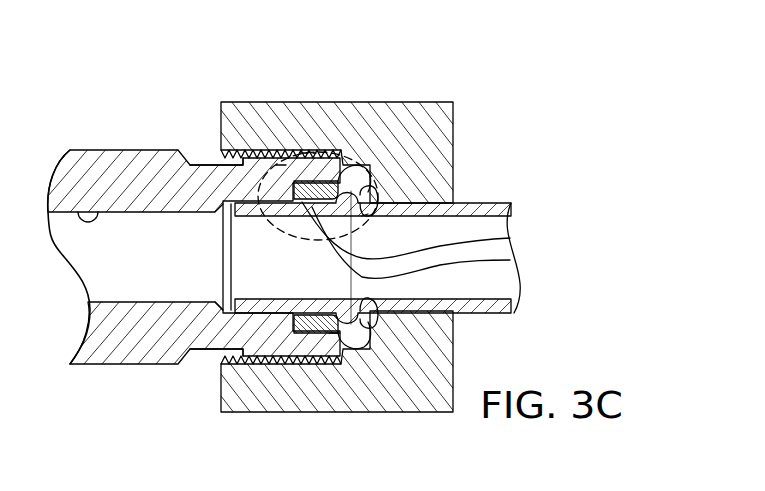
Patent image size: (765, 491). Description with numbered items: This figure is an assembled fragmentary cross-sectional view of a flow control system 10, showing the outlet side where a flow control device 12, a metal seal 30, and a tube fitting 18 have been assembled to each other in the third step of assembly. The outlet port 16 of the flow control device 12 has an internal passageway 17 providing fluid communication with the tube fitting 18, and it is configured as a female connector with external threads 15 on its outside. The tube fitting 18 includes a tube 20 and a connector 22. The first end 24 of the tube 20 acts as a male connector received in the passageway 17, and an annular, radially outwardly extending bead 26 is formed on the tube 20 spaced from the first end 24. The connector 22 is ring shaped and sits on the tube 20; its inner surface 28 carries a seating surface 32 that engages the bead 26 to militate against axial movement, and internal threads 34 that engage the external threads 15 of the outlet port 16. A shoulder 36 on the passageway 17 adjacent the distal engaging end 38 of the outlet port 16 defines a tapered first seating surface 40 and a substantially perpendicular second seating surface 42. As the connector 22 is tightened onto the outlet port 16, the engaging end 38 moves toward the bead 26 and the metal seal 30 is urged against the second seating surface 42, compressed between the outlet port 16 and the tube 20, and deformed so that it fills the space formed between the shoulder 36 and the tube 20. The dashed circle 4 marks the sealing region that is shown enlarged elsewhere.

The flow control system 10 is at (522, 89).
The flow control device 12 is at (152, 142).
The external threads 15 is at (280, 155).
The outlet port 16 is at (205, 172).
The internal passageway 17 is at (82, 211).
The tube fitting 18 is at (217, 67).
The tube 20 is at (495, 314).
The connector 22 is at (414, 102).
The first end 24 is at (219, 308).
The bead 26 is at (367, 350).
The inner surface 28 is at (340, 157).
The metal seal 30 is at (338, 335).
The seating surface 32 is at (368, 214).
The internal threads 34 is at (280, 163).
The shoulder 36 is at (573, 223).
The engaging end 38 is at (341, 447).
The first seating surface 40 is at (510, 238).
The second seating surface 42 is at (510, 260).
The detail view FIG. 4 is at (308, 150).